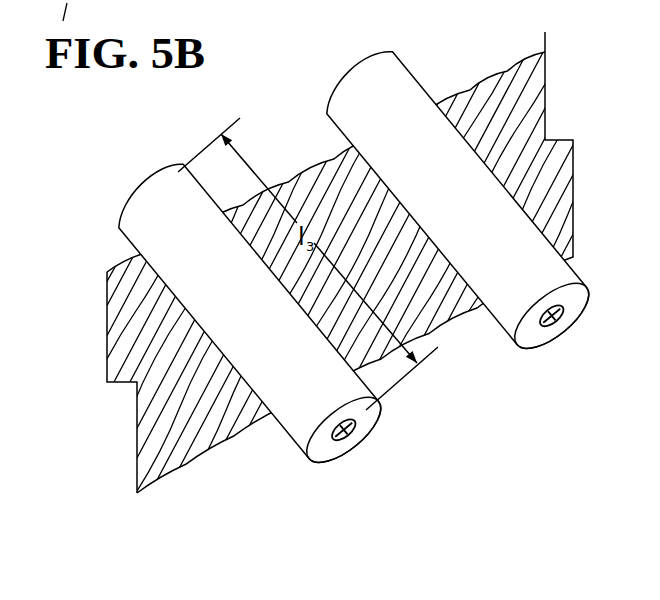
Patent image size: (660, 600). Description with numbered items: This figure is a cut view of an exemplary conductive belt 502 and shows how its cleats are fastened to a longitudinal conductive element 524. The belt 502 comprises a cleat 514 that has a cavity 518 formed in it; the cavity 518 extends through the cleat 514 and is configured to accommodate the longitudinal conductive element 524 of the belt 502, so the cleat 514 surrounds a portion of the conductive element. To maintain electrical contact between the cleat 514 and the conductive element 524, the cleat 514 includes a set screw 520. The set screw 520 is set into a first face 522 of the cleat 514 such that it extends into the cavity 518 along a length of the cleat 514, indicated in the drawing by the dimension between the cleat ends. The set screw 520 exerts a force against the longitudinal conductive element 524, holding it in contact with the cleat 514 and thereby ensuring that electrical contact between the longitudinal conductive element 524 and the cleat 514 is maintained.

The belt 502 is at (556, 69).
The longitudinal conductive element 524 is at (502, 70).
The cavity 518 is at (278, 415).
The cleat 514 is at (340, 455).
The first face 522 is at (367, 412).
The set screw 520 is at (350, 433).